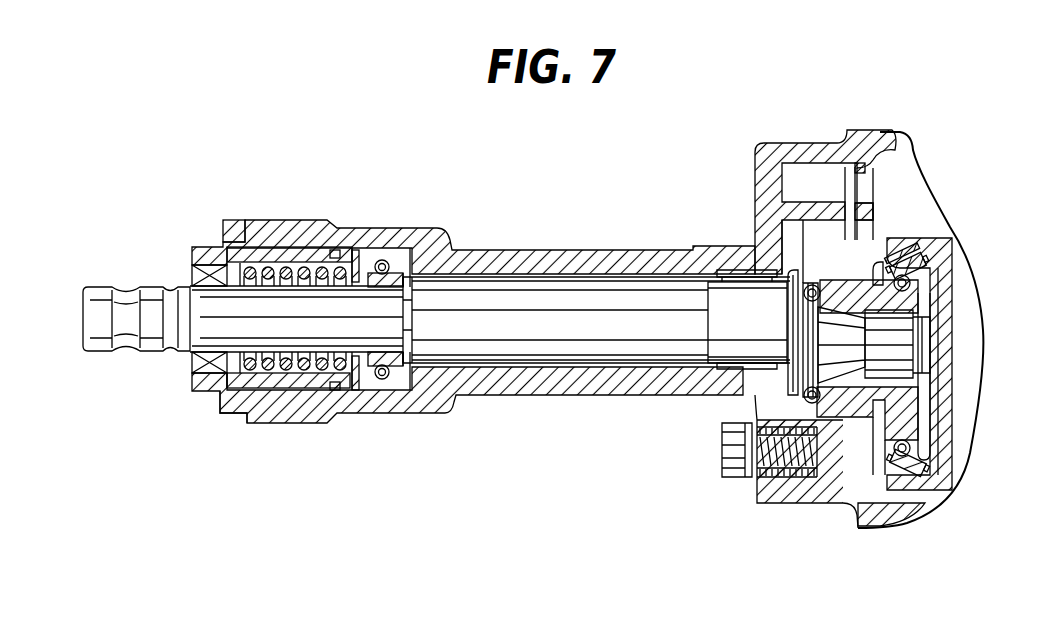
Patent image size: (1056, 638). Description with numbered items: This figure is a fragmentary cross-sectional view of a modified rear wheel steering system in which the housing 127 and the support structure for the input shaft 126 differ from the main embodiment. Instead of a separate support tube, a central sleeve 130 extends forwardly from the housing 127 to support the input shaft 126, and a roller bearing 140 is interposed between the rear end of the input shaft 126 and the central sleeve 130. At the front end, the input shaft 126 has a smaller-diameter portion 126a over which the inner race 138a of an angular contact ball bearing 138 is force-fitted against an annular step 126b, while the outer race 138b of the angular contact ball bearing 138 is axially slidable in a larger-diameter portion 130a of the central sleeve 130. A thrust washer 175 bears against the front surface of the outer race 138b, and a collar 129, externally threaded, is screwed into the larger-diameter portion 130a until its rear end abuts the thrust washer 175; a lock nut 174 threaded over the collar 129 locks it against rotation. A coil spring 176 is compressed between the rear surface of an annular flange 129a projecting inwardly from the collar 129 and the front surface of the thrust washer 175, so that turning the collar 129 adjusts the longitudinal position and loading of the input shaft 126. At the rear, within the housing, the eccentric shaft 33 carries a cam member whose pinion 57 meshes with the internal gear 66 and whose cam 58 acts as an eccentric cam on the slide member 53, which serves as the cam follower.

The eccentric shaft 33 is at (935, 345).
The slide member 53 is at (922, 466).
The pinion 57 is at (790, 290).
The cam 58 is at (905, 418).
The internal gear 66 is at (882, 206).
The input shaft 126 is at (436, 297).
The smaller-diameter portion 126a is at (198, 341).
The annular step 126b is at (403, 325).
The housing 127 is at (781, 136).
The collar 129 is at (262, 375).
The annular flange 129a is at (232, 365).
The central sleeve 130 is at (556, 380).
The larger-diameter portion 130a is at (330, 400).
The angular contact ball bearing 138 is at (407, 258).
The inner race 138a is at (408, 370).
The outer race 138b is at (356, 252).
The roller bearing 140 is at (738, 368).
The lock nut 174 is at (233, 230).
The thrust washer 175 is at (360, 386).
The coil spring 176 is at (252, 270).